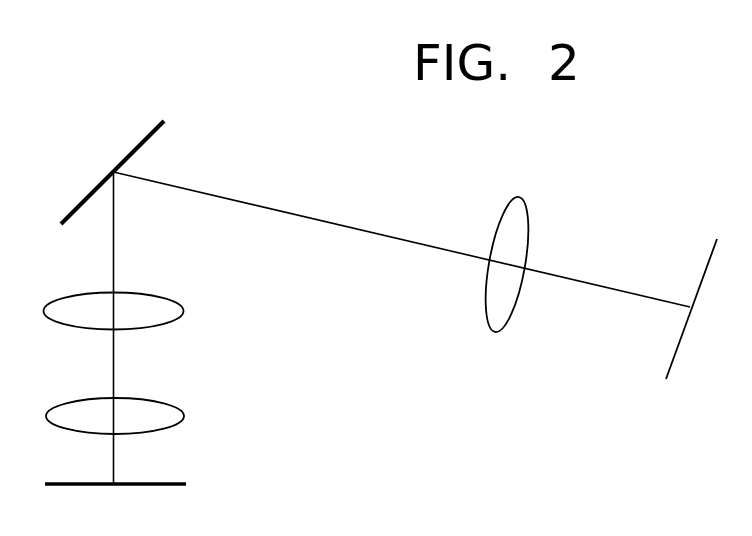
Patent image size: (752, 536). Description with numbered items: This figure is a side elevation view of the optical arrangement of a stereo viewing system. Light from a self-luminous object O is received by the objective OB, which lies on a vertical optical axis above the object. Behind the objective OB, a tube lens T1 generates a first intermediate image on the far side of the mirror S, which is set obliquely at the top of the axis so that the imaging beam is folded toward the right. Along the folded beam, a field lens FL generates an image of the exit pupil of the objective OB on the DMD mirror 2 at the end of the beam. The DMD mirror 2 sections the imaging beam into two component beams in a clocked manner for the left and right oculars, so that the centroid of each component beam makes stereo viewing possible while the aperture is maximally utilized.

The mirror S is at (137, 162).
The tube lens T1 is at (183, 312).
The objective OB is at (184, 417).
The self-luminous object O is at (187, 483).
The field lens FL is at (498, 230).
The DMD mirror 2 is at (707, 260).